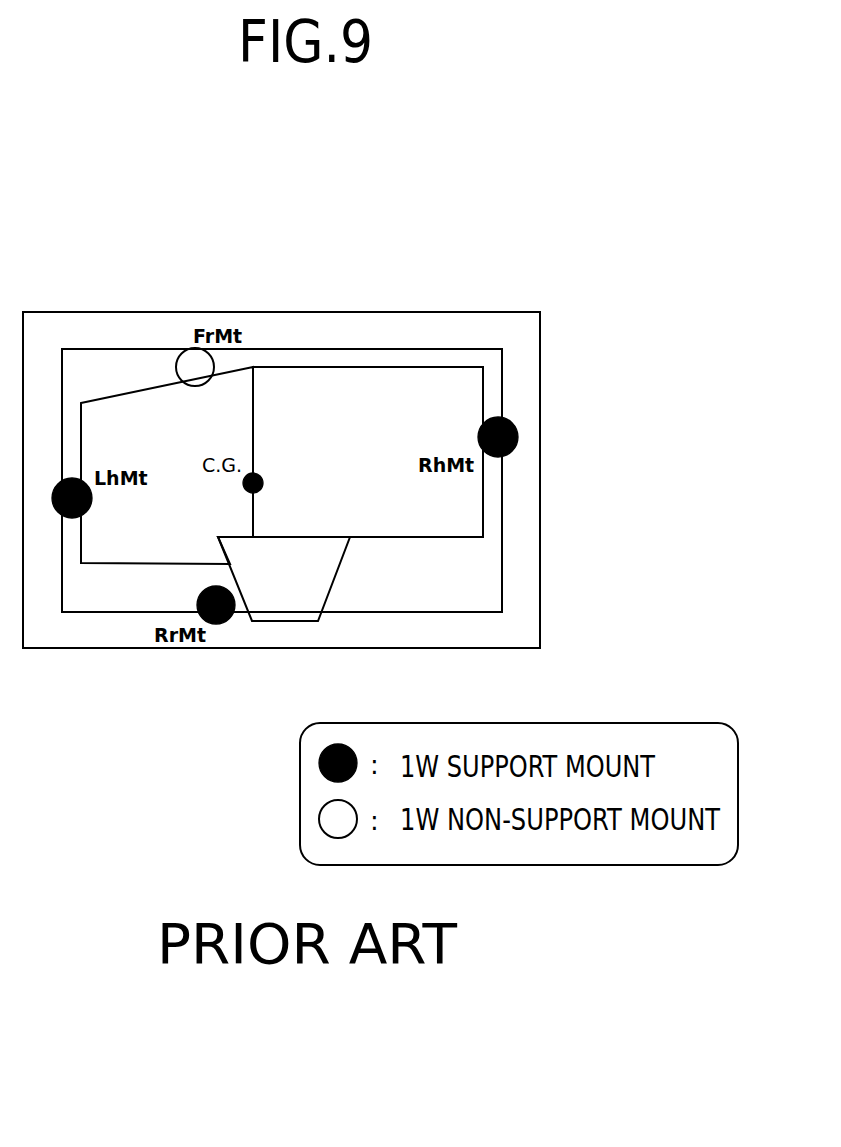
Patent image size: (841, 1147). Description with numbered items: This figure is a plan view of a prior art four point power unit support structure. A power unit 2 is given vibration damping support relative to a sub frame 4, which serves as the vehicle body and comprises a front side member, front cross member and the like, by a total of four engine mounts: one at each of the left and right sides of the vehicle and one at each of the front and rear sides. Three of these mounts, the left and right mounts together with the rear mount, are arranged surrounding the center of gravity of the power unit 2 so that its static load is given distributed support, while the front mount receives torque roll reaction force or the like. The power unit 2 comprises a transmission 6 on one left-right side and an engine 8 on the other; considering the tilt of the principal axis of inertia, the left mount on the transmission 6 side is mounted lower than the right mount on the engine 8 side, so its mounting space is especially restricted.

The sub frame 4 is at (108, 311).
The power unit 2 is at (306, 366).
The transmission 6 is at (136, 556).
The engine 8 is at (417, 390).